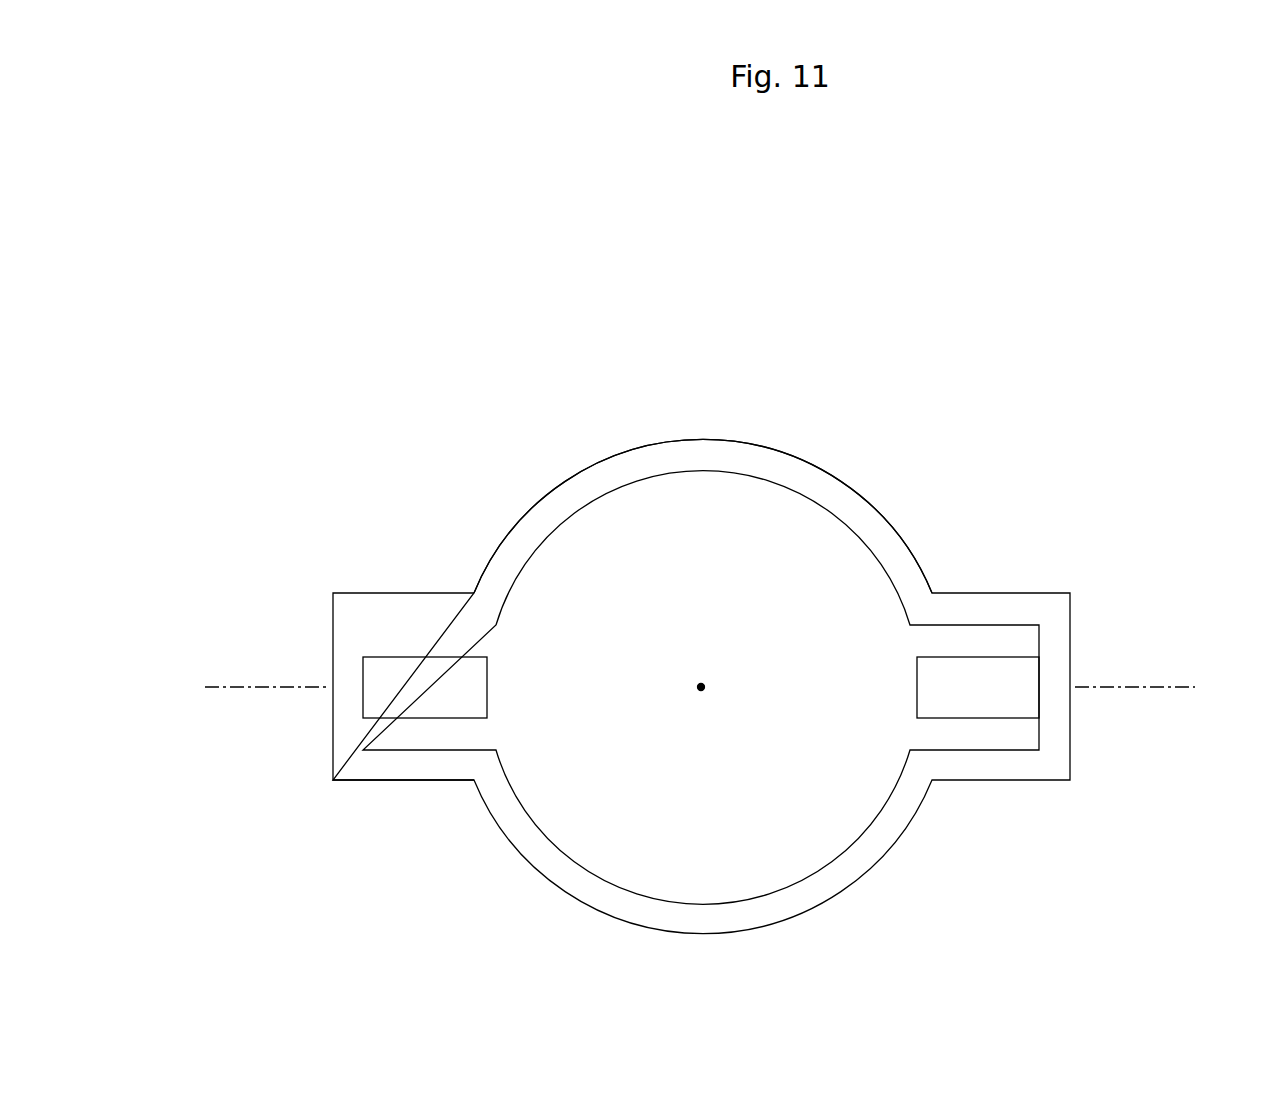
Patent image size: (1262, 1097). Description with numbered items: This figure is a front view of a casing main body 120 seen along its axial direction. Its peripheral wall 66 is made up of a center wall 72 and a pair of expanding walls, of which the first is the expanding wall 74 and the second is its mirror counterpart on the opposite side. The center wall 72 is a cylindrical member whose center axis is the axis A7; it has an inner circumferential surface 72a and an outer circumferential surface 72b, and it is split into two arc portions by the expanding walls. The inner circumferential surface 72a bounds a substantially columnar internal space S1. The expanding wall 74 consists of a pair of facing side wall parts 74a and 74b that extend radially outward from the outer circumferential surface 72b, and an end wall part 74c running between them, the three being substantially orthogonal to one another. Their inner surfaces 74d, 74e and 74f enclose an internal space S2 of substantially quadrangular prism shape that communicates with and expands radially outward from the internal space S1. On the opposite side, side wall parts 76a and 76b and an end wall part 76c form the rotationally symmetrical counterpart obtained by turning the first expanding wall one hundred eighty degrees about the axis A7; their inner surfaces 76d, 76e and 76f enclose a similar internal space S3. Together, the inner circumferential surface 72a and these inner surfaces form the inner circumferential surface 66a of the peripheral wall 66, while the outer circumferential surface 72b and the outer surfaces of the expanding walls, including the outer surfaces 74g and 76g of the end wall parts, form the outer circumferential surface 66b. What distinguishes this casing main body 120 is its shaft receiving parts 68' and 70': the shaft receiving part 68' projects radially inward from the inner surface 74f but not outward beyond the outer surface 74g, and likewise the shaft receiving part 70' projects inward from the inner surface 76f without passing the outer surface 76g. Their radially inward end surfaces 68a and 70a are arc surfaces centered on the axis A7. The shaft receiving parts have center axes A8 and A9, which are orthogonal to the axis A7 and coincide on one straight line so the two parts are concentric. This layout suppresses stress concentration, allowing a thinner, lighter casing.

The casing main body 120 is at (968, 305).
The peripheral wall 66 is at (808, 462).
The inner circumferential surface of the peripheral wall 66a is at (642, 482).
The outer circumferential surface of the peripheral wall 66b is at (575, 474).
The center wall 72 is at (857, 512).
The inner circumferential surface of the center wall 72a is at (744, 476).
The outer circumferential surface of the center wall 72b is at (748, 443).
The expanding wall 74 is at (331, 592).
The side wall part 74a is at (392, 607).
The side wall part 74b is at (415, 767).
The end wall part 74c is at (343, 726).
The inner surface of side wall part 74a 74d is at (432, 626).
The inner surface of side wall part 74b 74e is at (392, 750).
The inner surface of end wall part 74c 74f is at (372, 640).
The outer surface of end wall part 74c 74g is at (331, 656).
The side wall part 76a is at (993, 606).
The side wall part 76b is at (972, 770).
The end wall part 76c is at (1055, 724).
The inner surface of side wall part 76a 76d is at (947, 626).
The inner surface of side wall part 76b 76e is at (1010, 750).
The inner surface of end wall part 76c 76f is at (1034, 644).
The outer surface of end wall part 76c 76g is at (1073, 657).
The shaft receiving part 68' is at (425, 687).
The end surface of the shaft receiving part 68a is at (488, 685).
The shaft receiving part 70' is at (978, 687).
The end surface of the shaft receiving part 70a is at (916, 686).
The internal space S1 is at (668, 596).
The internal space S2 is at (428, 746).
The internal space S3 is at (948, 746).
The axis A7 is at (703, 692).
The axis A8 is at (225, 692).
The axis A9 is at (1182, 692).